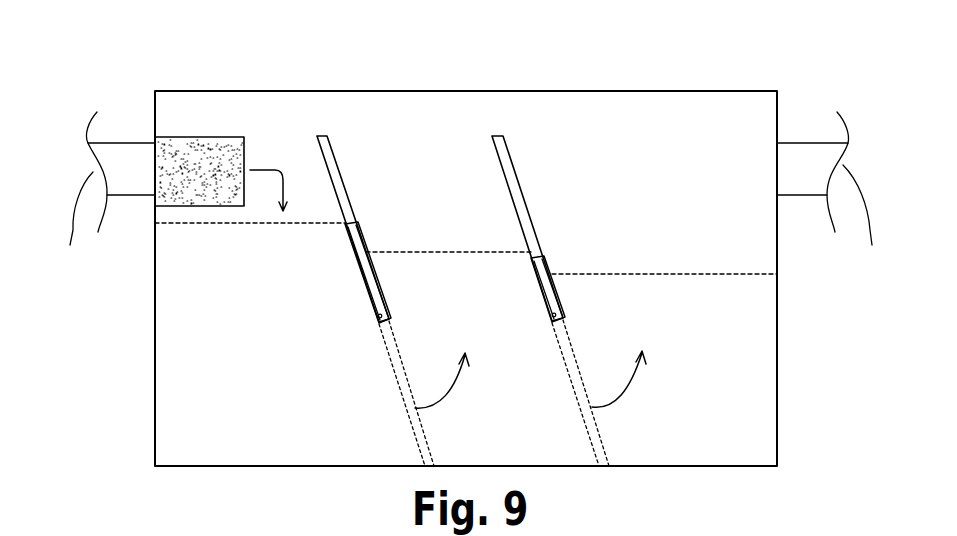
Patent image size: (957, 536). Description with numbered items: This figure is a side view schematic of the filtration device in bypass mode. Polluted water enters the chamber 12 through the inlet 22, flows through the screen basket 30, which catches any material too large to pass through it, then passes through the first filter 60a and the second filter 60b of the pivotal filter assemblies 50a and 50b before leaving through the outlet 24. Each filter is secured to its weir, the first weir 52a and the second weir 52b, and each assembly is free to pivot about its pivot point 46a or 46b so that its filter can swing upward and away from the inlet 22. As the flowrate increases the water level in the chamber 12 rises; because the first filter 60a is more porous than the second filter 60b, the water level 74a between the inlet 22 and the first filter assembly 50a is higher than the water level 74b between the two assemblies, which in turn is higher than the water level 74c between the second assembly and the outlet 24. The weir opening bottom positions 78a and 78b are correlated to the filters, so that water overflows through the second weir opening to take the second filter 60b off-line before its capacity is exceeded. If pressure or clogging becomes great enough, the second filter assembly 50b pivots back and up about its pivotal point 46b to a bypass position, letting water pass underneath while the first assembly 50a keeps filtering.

The chamber 12 is at (777, 343).
The inlet 22 is at (109, 194).
The outlet 24 is at (827, 194).
The screen basket 30 is at (207, 148).
The first filter assembly 50a is at (359, 244).
The second filter assembly 50b is at (595, 242).
The first weir 52a is at (348, 171).
The second weir 52b is at (518, 158).
The weir opening bottom of the first weir 78a is at (350, 222).
The weir opening bottom of the second weir 78b is at (535, 250).
The first pivot point 46a is at (375, 318).
The second pivot point 46b is at (560, 317).
The first filter 60a is at (391, 393).
The second filter 60b is at (609, 427).
The water level between the inlet and the first filter assembly 74a is at (218, 224).
The water level between the first and second filter assemblies 74b is at (437, 253).
The water level between the second filter assembly and the outlet 74c is at (677, 273).